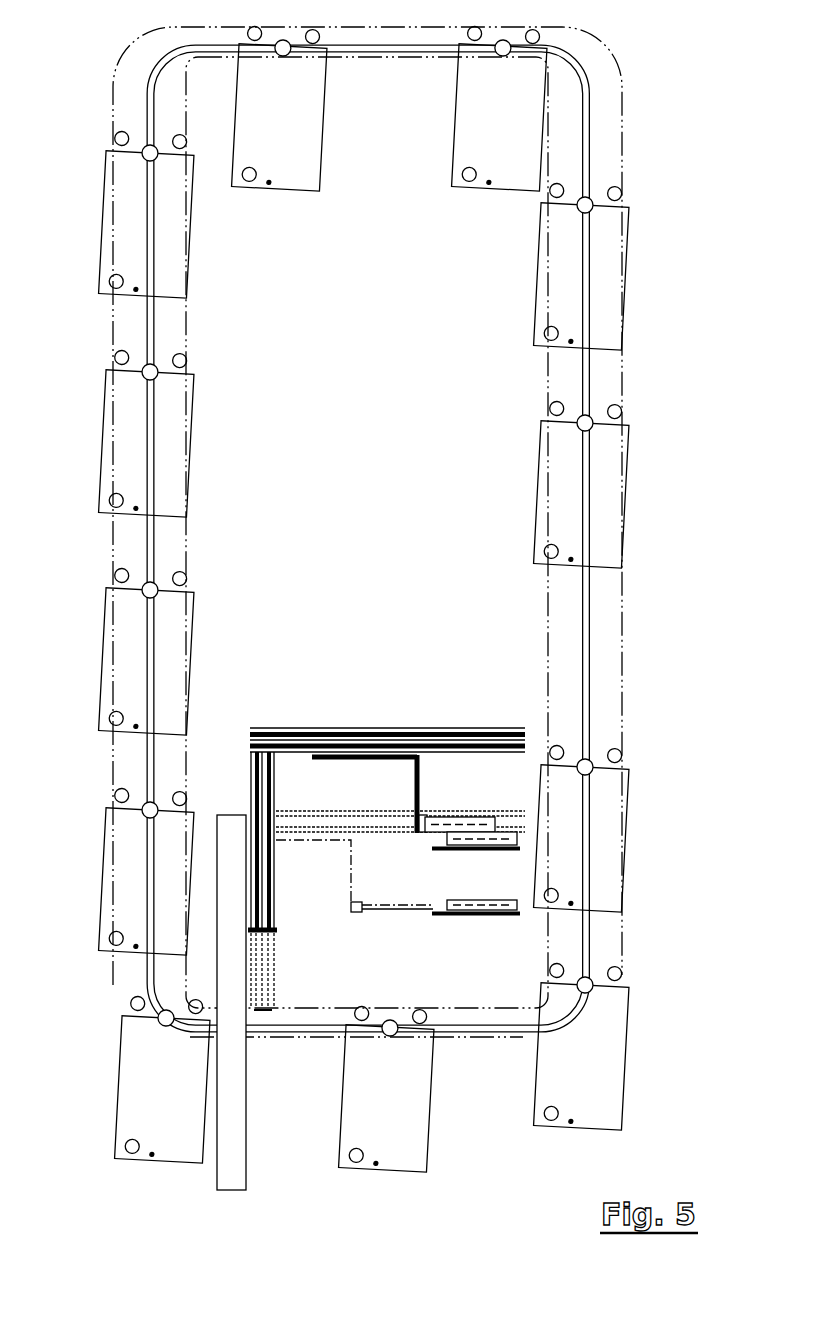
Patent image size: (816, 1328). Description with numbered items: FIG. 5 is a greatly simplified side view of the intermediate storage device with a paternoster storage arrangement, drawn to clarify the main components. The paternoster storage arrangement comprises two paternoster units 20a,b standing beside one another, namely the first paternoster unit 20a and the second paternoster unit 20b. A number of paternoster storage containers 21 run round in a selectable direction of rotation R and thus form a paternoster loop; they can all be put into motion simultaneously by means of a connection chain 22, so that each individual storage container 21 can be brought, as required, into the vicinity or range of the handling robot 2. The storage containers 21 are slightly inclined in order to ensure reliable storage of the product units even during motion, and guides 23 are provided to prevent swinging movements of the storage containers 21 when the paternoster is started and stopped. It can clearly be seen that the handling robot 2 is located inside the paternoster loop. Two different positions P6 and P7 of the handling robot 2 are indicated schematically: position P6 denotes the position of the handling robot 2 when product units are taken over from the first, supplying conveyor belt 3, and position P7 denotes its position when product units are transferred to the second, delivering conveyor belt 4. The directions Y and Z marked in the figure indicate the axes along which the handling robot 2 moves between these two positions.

The paternoster units 20a,b is at (680, 31).
The paternoster unit 20a is at (680, 31).
The paternoster unit 20b is at (640, 48).
The paternoster storage container 21 is at (630, 447).
The connection chain 22 is at (585, 635).
The guide 23 is at (622, 683).
The handling robot 2 is at (454, 804).
The first conveyor belt 3 is at (523, 836).
The second conveyor belt 4 is at (462, 907).
The position of handling robot P6 is at (397, 854).
The position of handling robot P7 is at (387, 922).
The Y direction Y is at (286, 793).
The Z direction Z is at (289, 864).
The direction of rotation R is at (61, 785).